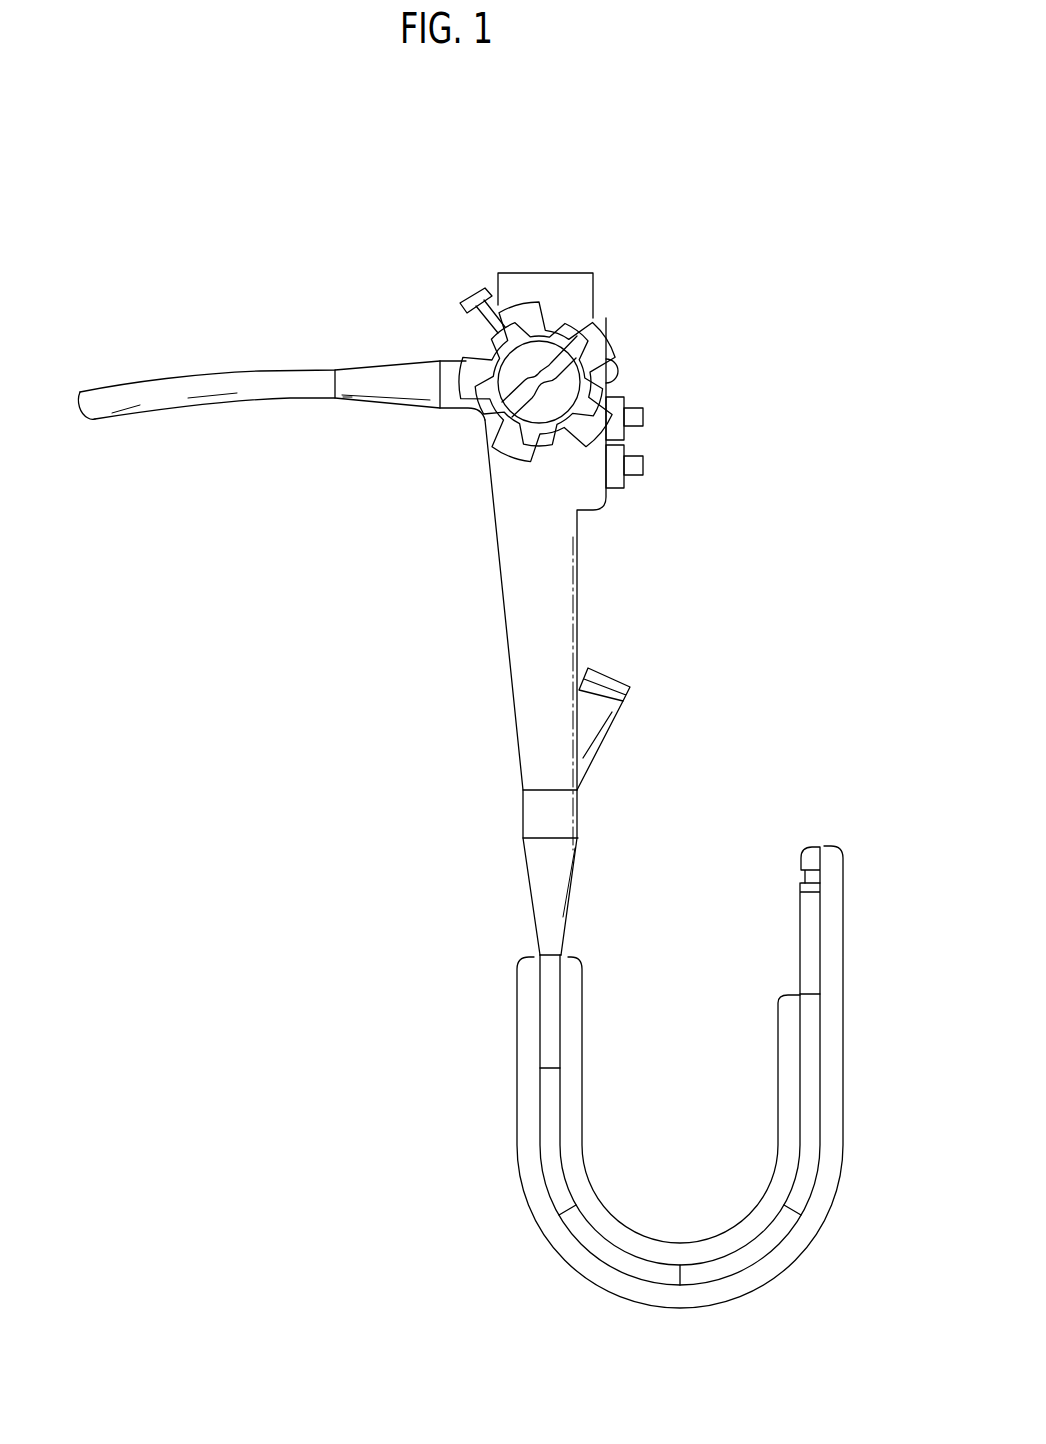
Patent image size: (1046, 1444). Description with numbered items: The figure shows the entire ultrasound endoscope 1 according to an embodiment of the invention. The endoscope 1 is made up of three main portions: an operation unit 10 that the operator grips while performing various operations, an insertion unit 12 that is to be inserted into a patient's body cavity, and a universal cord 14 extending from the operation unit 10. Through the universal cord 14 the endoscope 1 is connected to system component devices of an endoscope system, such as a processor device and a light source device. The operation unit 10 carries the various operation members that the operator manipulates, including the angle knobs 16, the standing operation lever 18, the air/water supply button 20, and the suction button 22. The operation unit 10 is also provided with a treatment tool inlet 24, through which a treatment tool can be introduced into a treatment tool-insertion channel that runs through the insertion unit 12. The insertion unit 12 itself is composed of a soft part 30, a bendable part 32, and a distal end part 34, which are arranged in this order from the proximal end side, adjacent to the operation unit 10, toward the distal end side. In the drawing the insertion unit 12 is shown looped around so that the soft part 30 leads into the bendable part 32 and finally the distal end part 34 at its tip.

The endoscope 1 is at (327, 221).
The operation unit 10 is at (700, 273).
The insertion unit 12 is at (517, 1088).
The universal cord 14 is at (165, 378).
The angle knobs 16 is at (518, 453).
The standing operation lever 18 is at (474, 293).
The air/water supply button 20 is at (644, 466).
The suction button 22 is at (644, 418).
The treatment tool inlet 24 is at (608, 681).
The soft part 30 is at (582, 1088).
The bendable part 32 is at (803, 949).
The distal end part 34 is at (803, 876).